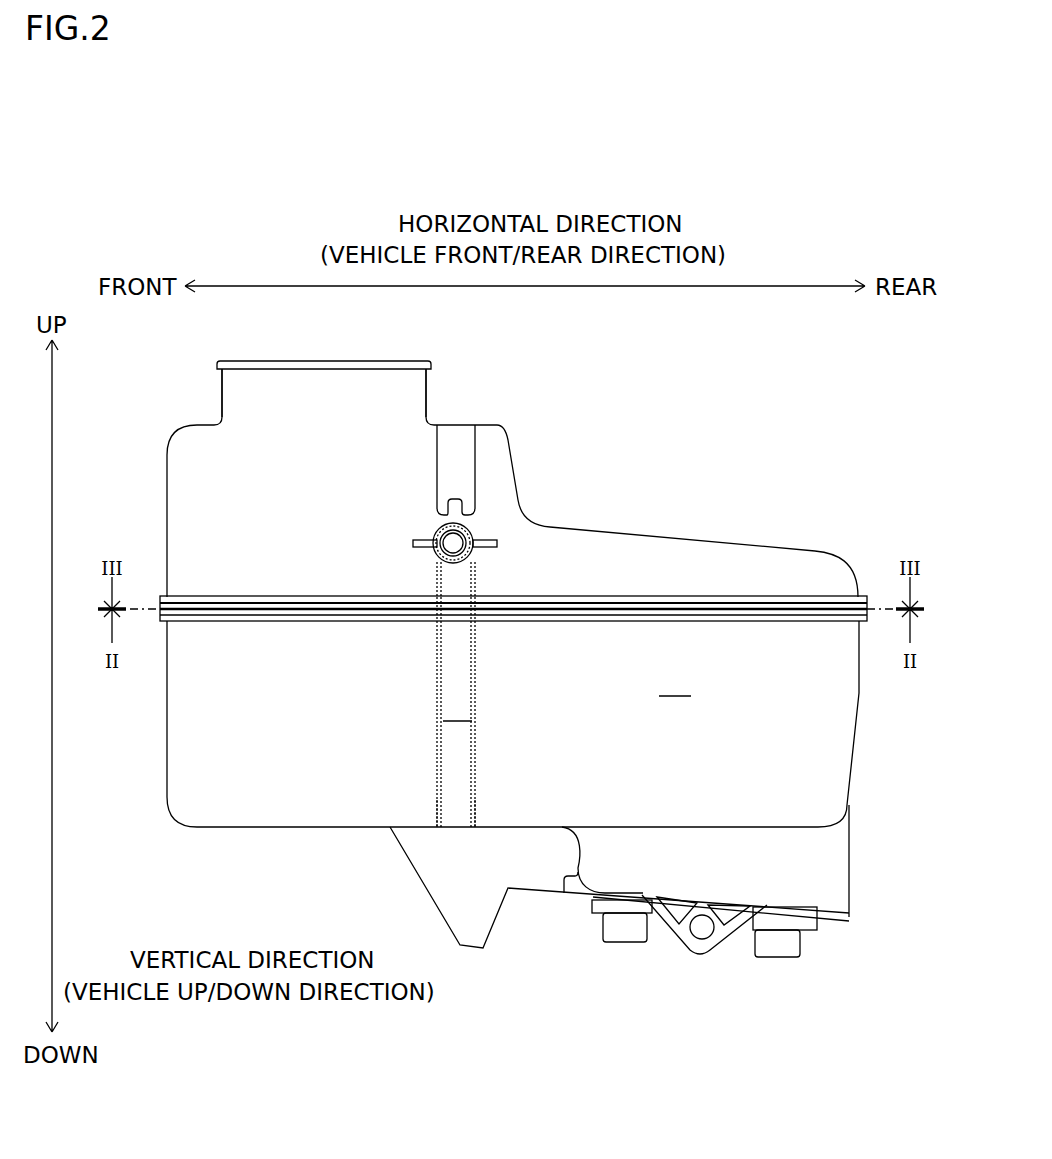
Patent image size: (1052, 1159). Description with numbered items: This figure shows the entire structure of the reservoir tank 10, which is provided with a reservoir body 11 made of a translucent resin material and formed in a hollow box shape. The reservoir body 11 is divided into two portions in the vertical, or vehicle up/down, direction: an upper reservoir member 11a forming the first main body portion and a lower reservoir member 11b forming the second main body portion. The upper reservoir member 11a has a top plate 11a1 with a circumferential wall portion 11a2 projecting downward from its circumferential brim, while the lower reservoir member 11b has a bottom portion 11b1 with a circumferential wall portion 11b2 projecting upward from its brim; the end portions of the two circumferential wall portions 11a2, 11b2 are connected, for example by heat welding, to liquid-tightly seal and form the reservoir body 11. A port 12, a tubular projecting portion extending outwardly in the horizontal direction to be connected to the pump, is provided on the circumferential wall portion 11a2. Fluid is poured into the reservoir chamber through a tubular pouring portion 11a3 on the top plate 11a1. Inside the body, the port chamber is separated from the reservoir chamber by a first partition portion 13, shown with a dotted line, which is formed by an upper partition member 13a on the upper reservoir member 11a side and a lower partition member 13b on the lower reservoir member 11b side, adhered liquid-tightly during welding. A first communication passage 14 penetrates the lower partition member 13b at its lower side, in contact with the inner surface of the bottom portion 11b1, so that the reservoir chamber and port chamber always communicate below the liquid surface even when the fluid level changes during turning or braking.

The reservoir tank 10 is at (668, 350).
The reservoir body 11 is at (754, 429).
The upper reservoir member 11a is at (596, 497).
The top plate 11a1 is at (671, 535).
The circumferential wall portion 11a2 is at (770, 578).
The tubular pouring portion 11a3 is at (417, 403).
The lower reservoir member 11b is at (865, 797).
The bottom portion 11b1 is at (228, 827).
The circumferential wall portion 11b2 is at (810, 733).
The port 12 is at (437, 533).
The first partition portion 13 is at (415, 710).
The upper partition member 13a is at (477, 575).
The lower partition member 13b is at (477, 745).
The first communication passage 14 is at (474, 812).